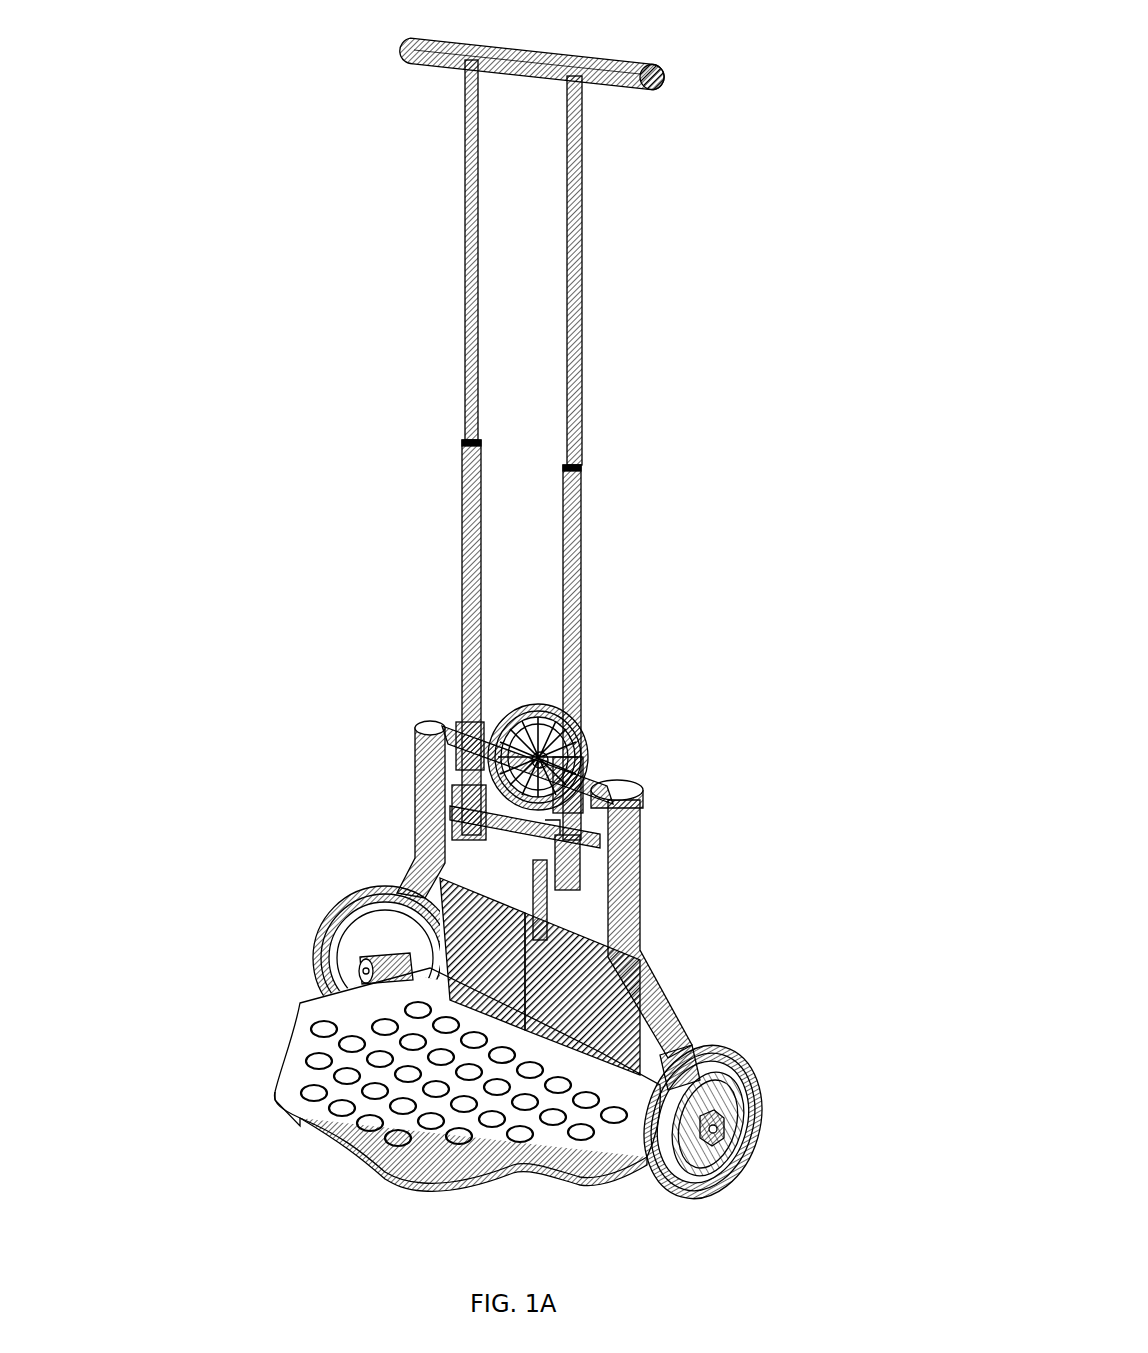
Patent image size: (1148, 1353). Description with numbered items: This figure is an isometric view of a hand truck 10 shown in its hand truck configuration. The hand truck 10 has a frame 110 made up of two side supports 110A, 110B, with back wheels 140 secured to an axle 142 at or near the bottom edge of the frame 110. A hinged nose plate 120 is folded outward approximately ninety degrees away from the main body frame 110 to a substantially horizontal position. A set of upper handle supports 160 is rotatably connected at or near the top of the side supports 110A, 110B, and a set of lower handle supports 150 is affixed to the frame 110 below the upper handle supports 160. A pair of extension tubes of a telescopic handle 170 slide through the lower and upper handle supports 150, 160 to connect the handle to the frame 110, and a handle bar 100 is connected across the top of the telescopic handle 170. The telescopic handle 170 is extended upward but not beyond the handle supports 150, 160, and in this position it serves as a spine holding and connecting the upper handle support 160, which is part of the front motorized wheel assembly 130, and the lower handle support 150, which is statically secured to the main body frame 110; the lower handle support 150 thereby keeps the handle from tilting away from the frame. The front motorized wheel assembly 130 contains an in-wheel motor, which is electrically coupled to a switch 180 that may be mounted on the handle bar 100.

The hand truck 10 is at (250, 192).
The handle bar 100 is at (674, 68).
The frame 110 is at (576, 821).
The side support 110A is at (637, 878).
The side support 110B is at (420, 806).
The hinged nose plate 120 is at (305, 1038).
The front motorized wheel assembly 130 is at (551, 694).
The back wheels 140 is at (418, 896).
The axle 142 is at (720, 1130).
The lower handle supports 150 is at (600, 822).
The upper handle supports 160 is at (590, 862).
The telescopic handle 170 is at (460, 331).
The switch 180 is at (508, 900).